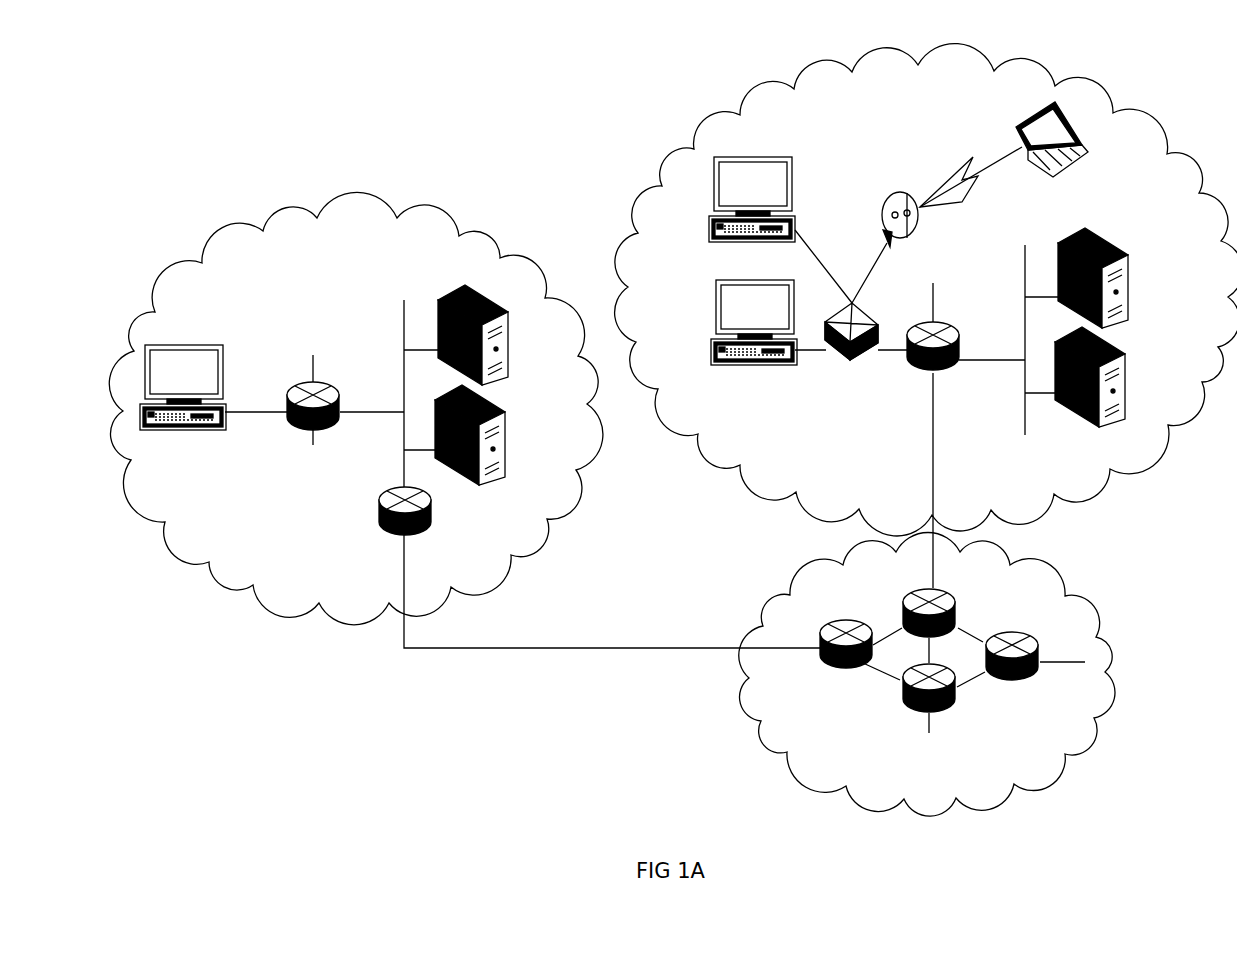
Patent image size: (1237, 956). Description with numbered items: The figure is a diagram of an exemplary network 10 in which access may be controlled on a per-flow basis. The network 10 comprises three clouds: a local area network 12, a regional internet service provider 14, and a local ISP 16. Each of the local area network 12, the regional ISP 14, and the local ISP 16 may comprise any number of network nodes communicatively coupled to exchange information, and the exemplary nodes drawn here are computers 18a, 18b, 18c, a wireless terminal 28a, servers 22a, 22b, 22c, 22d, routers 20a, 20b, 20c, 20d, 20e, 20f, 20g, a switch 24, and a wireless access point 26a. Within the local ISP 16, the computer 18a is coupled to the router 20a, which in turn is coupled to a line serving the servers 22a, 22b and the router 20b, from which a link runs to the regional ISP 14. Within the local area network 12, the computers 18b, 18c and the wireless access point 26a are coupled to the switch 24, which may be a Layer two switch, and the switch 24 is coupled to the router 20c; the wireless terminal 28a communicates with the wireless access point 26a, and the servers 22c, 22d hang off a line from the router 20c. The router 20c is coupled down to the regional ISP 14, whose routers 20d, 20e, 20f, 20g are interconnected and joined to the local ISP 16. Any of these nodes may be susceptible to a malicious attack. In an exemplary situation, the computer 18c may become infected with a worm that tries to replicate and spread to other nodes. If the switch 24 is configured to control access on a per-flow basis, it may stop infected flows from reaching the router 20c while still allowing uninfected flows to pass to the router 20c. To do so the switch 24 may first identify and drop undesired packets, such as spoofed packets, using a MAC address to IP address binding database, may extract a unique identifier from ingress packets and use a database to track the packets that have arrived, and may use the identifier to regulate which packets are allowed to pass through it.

The network 10 is at (510, 125).
The local area network 12 is at (1148, 112).
The regional internet service provider 14 is at (1073, 618).
The local ISP 16 is at (165, 288).
The computer 18a is at (190, 428).
The computer 18b is at (717, 240).
The computer 18c is at (737, 365).
The router 20a is at (297, 430).
The router 20b is at (380, 507).
The router 20c is at (950, 377).
The router 20d is at (958, 618).
The router 20e is at (820, 665).
The router 20f is at (890, 697).
The router 20g is at (1005, 687).
The server 22a is at (508, 380).
The server 22b is at (467, 483).
The server 22c is at (1130, 267).
The server 22d is at (1127, 362).
The switch 24 is at (850, 358).
The wireless access point 26a is at (887, 195).
The wireless terminal 28a is at (1088, 153).